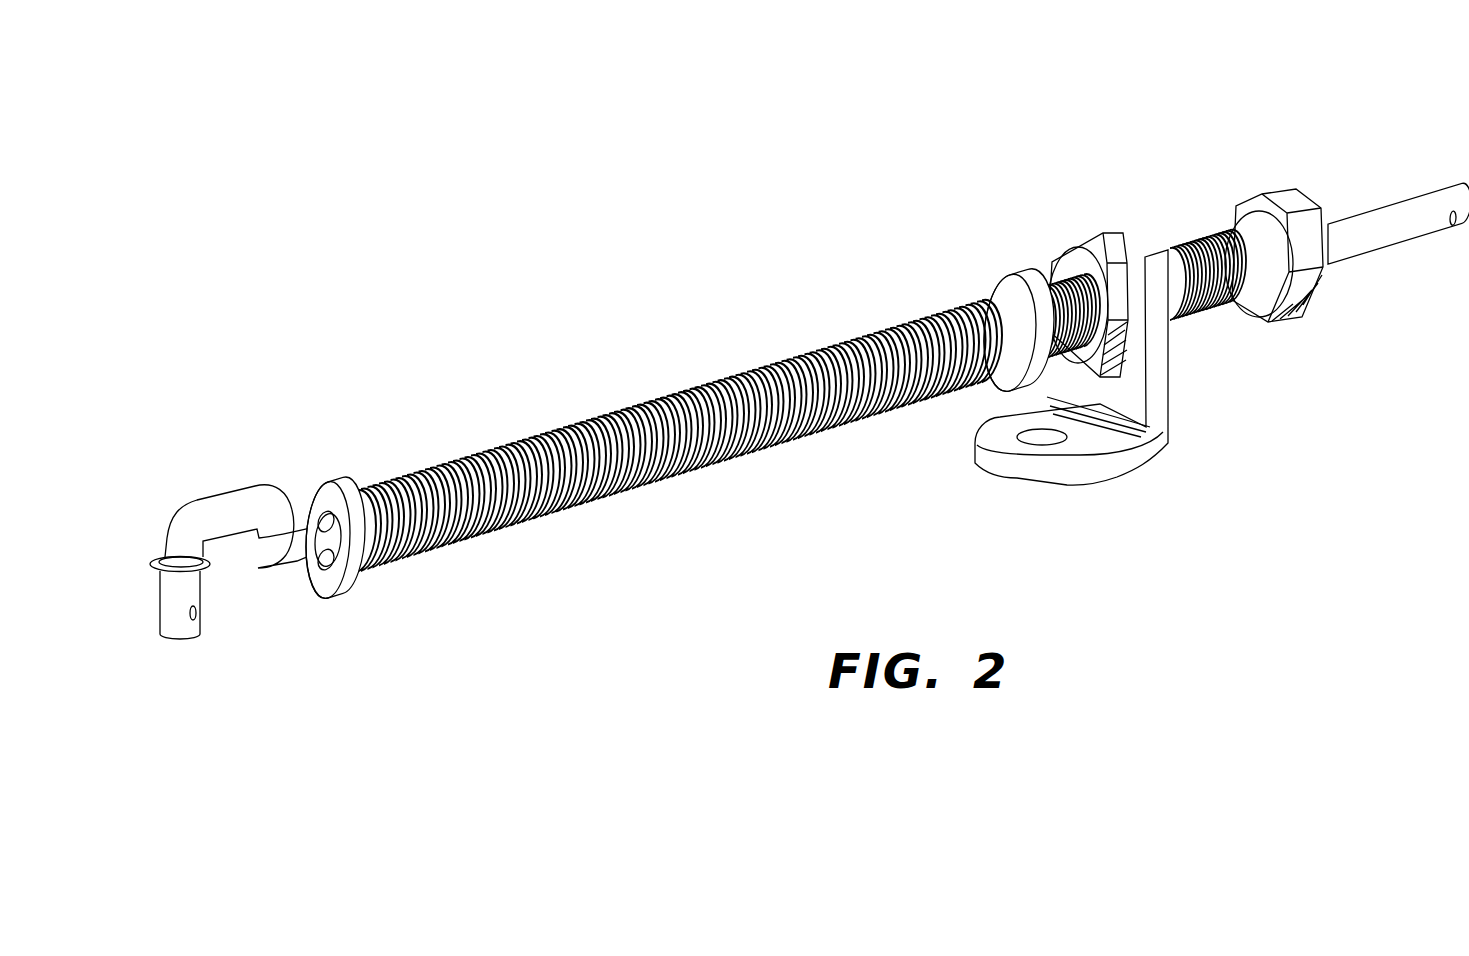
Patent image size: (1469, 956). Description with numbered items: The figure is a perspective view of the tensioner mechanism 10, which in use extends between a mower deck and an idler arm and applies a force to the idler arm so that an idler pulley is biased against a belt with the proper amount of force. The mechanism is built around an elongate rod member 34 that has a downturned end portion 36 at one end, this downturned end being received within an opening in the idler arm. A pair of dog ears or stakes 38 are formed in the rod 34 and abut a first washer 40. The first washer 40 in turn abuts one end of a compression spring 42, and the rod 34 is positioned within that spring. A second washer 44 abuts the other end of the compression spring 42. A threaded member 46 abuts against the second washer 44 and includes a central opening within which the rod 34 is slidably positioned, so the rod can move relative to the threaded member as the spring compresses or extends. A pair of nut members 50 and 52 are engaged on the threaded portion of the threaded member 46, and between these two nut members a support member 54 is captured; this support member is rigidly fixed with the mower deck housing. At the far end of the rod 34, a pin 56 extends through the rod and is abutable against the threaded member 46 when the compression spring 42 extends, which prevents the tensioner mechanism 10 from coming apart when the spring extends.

The tensioner mechanism 10 is at (713, 112).
The rod member 34 is at (1368, 204).
The downturned end portion 36 is at (163, 621).
The dog ears or stakes 38 is at (294, 530).
The first washer 40 is at (330, 488).
The compression spring 42 is at (705, 385).
The second washer 44 is at (993, 292).
The threaded member 46 is at (1166, 250).
The nut member 50 is at (1130, 322).
The nut member 52 is at (1182, 331).
The support member 54 is at (1153, 448).
The pin 56 is at (1451, 226).